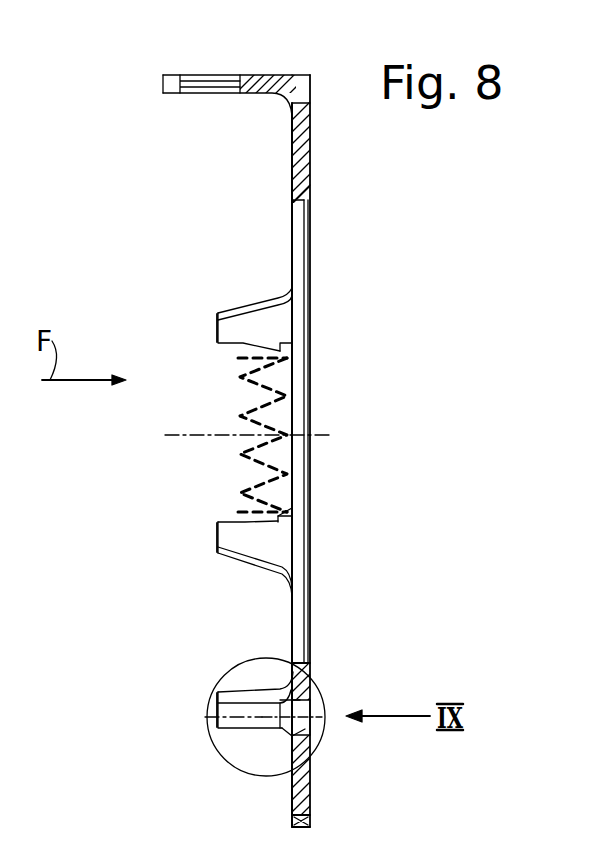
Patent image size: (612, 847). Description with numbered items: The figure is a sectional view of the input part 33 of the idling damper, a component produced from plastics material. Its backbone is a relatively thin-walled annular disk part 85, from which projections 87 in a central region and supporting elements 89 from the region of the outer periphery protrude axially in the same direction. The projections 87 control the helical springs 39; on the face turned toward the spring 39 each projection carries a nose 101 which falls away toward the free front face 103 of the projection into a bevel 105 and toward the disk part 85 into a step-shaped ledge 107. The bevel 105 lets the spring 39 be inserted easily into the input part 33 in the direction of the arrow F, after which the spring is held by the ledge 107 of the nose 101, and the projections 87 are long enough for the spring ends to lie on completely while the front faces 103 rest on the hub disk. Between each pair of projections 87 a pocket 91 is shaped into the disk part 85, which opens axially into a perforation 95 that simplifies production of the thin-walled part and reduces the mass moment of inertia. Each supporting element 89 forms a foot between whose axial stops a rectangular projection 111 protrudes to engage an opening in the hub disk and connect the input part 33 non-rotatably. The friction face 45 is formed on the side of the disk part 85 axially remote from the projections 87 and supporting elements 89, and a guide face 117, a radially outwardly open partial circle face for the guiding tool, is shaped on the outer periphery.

The input part 33 is at (338, 307).
The helical spring 39 is at (305, 378).
The friction face 45 is at (310, 150).
The annular disk part 85 is at (292, 147).
The projection 87 is at (250, 326).
The supporting element 89 is at (266, 78).
The pocket 91 is at (287, 733).
The perforation 95 is at (313, 728).
The nose 101 is at (237, 353).
The front face 103 is at (216, 330).
The bevel 105 is at (304, 487).
The ledge 107 is at (300, 517).
The projection 111 is at (190, 80).
The guide face 117 is at (292, 821).